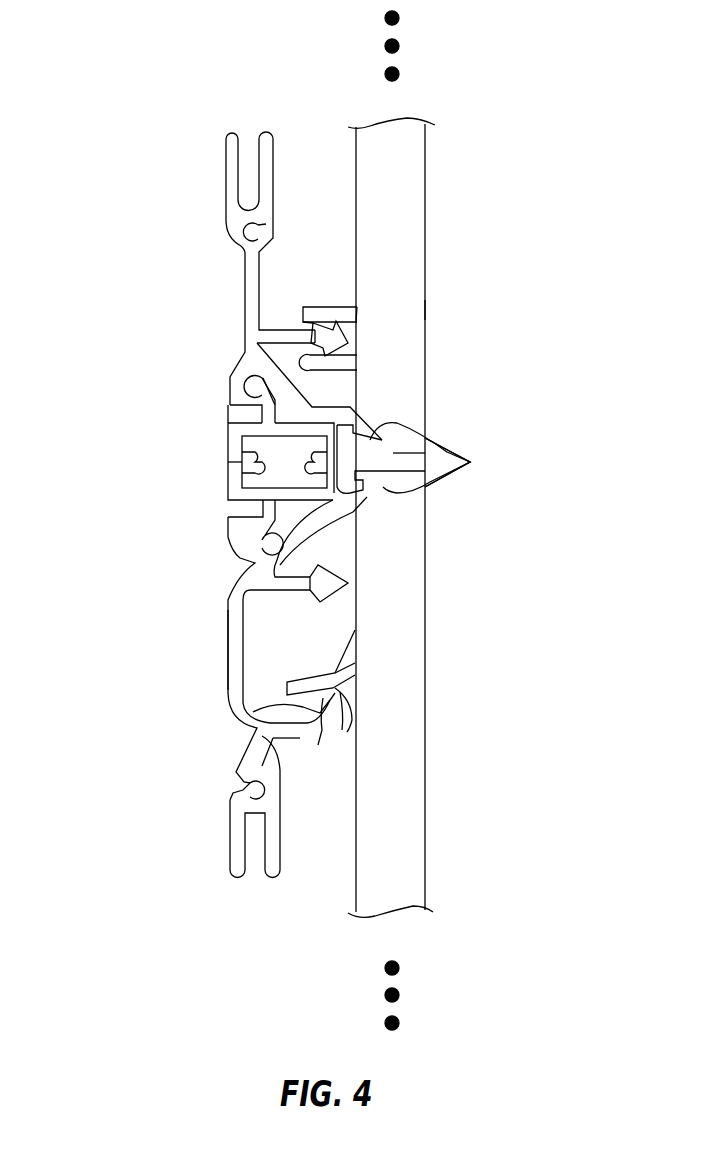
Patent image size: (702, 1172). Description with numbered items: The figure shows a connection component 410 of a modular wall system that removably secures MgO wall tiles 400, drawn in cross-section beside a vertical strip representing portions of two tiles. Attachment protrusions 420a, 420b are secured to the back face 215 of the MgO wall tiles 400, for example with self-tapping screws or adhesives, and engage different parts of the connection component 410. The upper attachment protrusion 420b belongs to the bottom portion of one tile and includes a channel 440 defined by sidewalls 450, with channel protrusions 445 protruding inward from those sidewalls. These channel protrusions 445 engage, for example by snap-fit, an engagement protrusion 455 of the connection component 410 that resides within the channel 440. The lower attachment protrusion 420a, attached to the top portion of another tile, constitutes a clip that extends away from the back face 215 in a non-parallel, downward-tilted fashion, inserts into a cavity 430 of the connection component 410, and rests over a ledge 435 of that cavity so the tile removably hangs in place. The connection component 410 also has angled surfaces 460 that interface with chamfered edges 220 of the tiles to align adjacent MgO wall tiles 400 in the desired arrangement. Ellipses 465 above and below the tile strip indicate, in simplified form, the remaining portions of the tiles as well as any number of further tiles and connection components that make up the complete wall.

The back face 215 is at (355, 154).
The chamfered edges 220 is at (470, 462).
The MgO wall tiles 400 is at (426, 278).
The connection component 410 is at (200, 462).
The attachment protrusion 420a is at (337, 678).
The attachment protrusion 420b is at (322, 285).
The cavity 430 is at (253, 681).
The ledge 435 is at (280, 707).
The channel 440 is at (345, 347).
The channel protrusions 445 is at (303, 326).
The sidewalls 450 is at (347, 307).
The engagement protrusion 455 is at (340, 332).
The angled surfaces 460 is at (470, 462).
The ellipses 465 is at (438, 43).